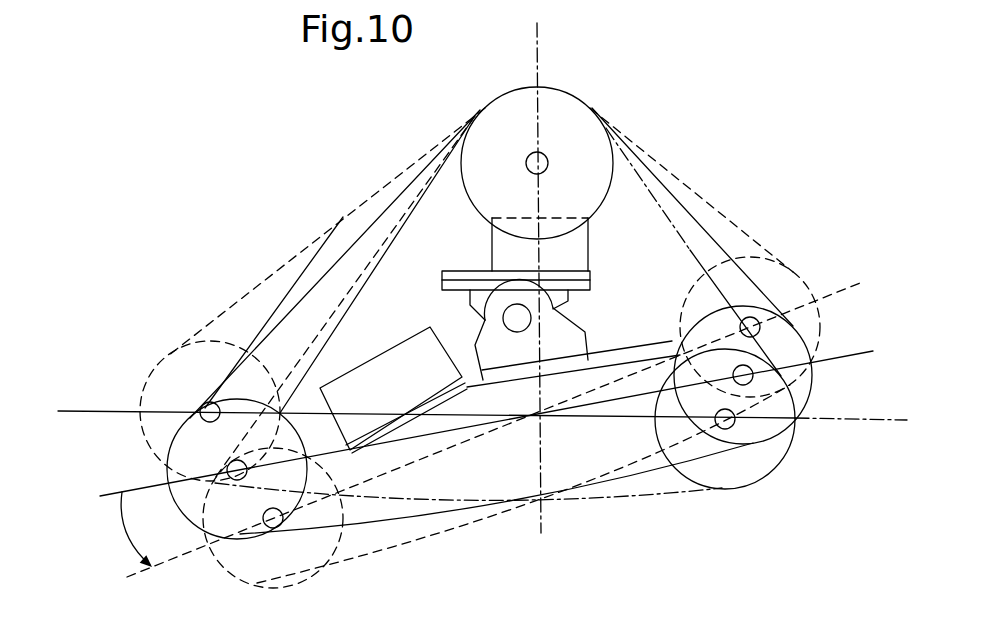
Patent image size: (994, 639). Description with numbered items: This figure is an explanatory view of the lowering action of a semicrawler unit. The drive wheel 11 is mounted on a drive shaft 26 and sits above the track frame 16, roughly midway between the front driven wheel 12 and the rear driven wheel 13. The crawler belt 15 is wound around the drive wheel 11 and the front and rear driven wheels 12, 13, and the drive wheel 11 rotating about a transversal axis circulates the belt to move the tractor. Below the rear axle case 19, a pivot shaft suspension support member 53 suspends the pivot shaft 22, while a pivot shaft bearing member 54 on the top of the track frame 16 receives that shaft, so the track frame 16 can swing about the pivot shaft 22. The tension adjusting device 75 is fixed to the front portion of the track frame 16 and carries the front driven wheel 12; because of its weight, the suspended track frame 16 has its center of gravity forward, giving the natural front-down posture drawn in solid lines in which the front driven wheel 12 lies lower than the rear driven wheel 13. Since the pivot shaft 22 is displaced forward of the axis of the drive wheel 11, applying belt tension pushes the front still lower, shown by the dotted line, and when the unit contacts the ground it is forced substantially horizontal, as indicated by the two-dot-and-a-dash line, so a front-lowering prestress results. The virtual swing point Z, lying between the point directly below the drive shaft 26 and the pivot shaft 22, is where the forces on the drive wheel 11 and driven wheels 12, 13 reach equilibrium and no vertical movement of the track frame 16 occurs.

The drive wheel 11 is at (578, 125).
The drive shaft 26 is at (549, 160).
The crawler belt 15 is at (317, 285).
The front driven wheel 12 is at (205, 407).
The rear driven wheel 13 is at (780, 338).
The rear axle case 19 is at (568, 258).
The pivot shaft suspension support member 53 is at (482, 300).
The virtual swing point Z is at (531, 320).
The pivot shaft bearing member 54 is at (567, 340).
The track frame 16 is at (573, 383).
The pivot shaft 22 is at (503, 320).
The tension adjusting device 75 is at (357, 378).